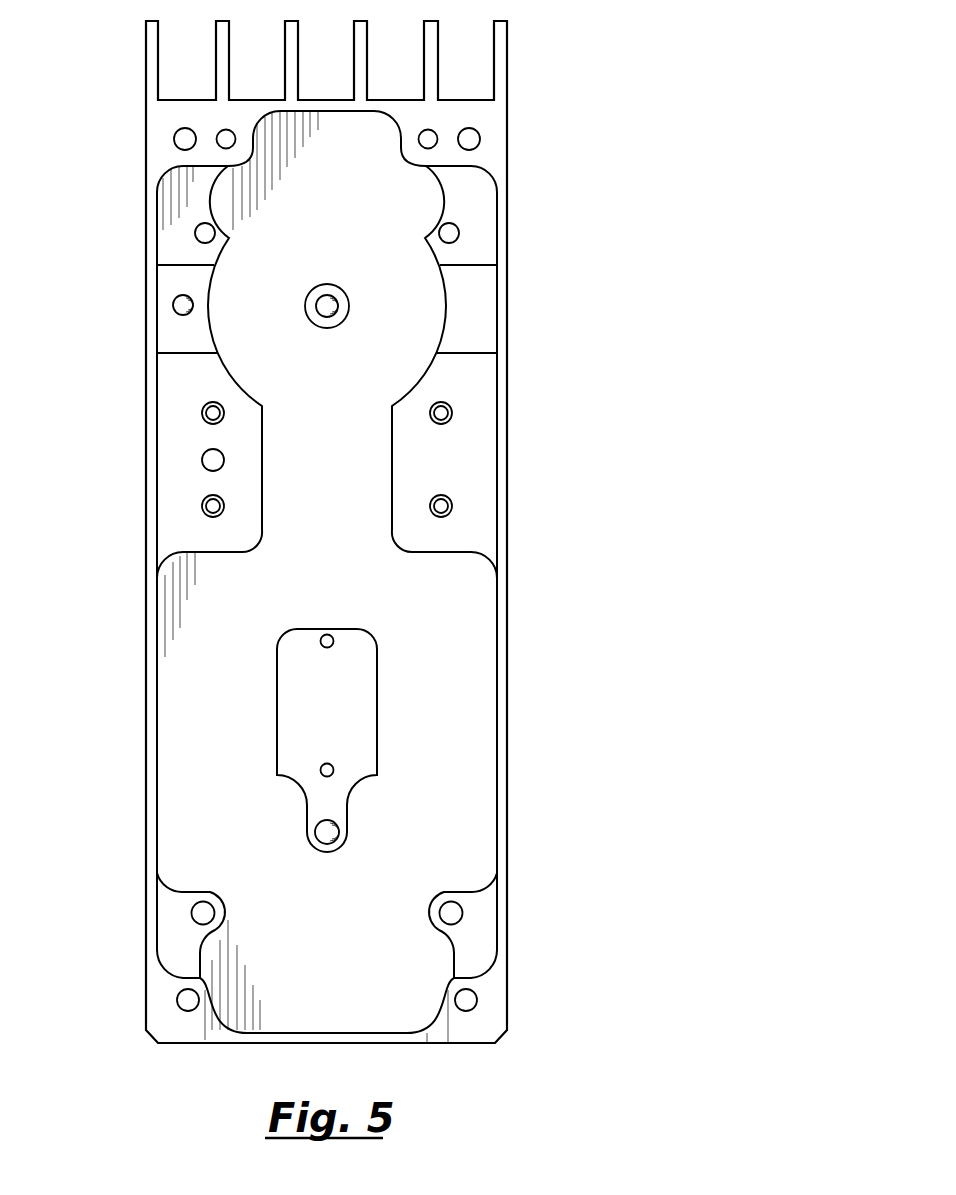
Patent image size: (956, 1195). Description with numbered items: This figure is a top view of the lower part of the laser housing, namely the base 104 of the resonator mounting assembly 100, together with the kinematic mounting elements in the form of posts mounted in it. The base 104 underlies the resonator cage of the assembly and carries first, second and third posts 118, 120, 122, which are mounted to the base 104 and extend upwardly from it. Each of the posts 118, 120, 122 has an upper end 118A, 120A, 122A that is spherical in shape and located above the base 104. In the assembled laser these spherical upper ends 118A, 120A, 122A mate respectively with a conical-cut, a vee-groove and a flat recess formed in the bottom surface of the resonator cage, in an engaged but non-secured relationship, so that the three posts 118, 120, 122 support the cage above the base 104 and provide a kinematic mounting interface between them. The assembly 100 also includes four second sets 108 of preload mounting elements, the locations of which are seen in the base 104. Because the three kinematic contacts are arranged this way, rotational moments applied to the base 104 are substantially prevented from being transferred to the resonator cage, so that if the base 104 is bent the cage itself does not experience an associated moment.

The resonator mounting assembly 100 is at (512, 374).
The base 104 is at (501, 665).
The second sets of preload mounting elements 108 is at (208, 315).
The first post 118 is at (338, 843).
The upper end of first post 118A is at (323, 833).
The second post 120 is at (322, 302).
The upper end of second post 120A is at (328, 297).
The third post 122 is at (175, 302).
The upper end of third post 122A is at (175, 310).